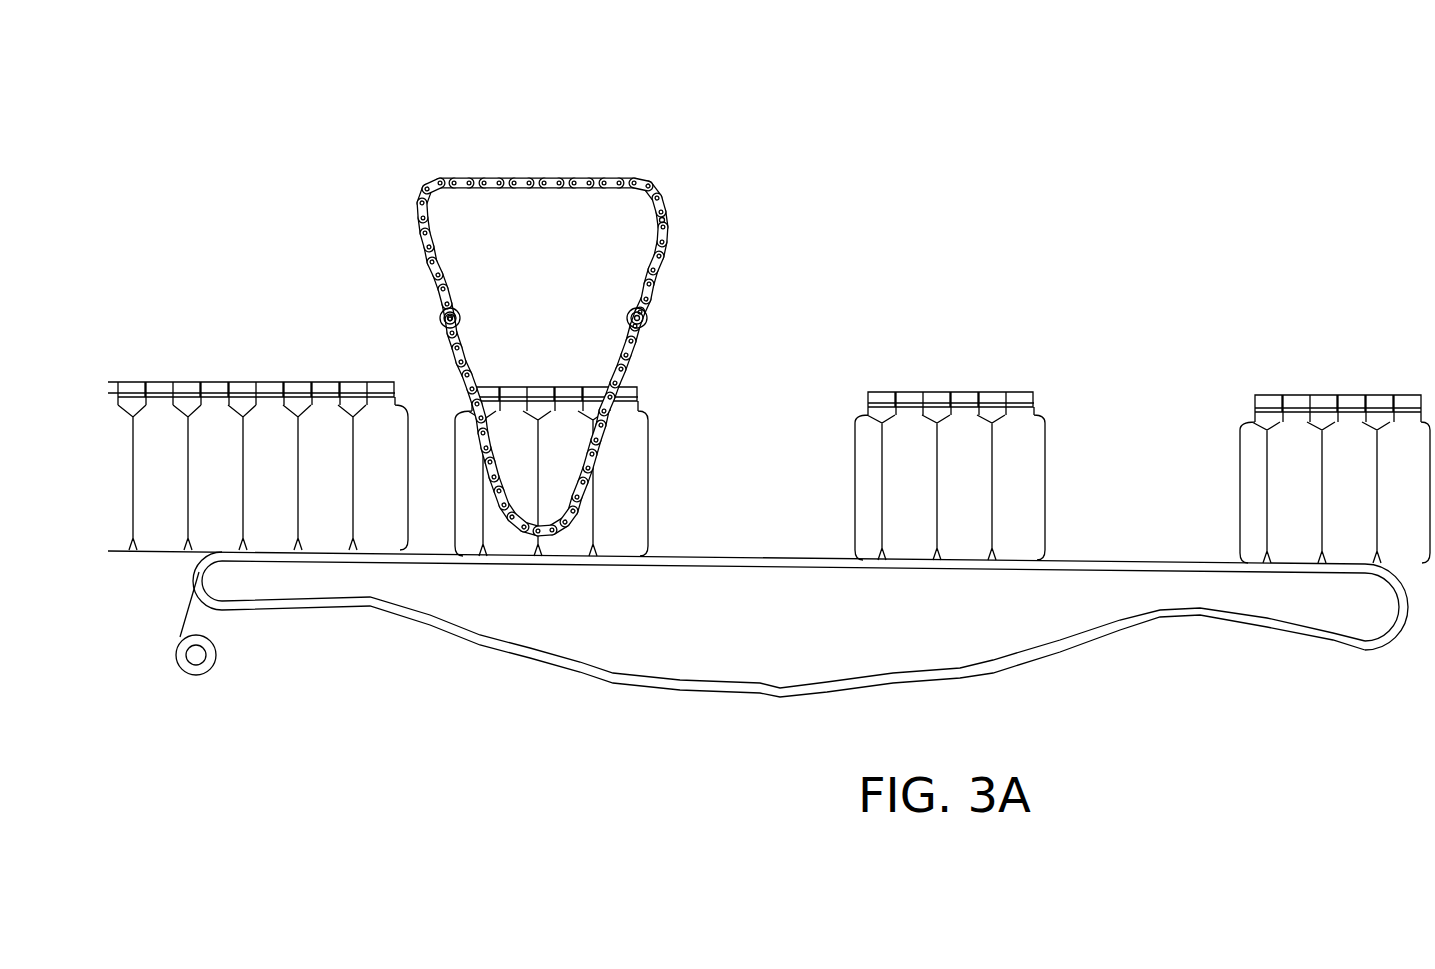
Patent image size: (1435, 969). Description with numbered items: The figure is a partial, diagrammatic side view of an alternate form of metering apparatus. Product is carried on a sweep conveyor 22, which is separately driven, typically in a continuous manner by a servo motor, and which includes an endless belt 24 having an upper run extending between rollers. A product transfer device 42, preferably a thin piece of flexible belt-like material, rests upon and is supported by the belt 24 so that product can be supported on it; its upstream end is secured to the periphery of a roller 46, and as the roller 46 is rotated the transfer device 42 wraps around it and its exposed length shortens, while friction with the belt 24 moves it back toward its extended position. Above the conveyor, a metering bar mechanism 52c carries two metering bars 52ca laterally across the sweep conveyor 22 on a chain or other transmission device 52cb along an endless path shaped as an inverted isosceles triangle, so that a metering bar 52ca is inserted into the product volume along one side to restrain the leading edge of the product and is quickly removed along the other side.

The sweep conveyor 22 is at (696, 683).
The endless belt 24 is at (540, 650).
The product transfer device 42 is at (190, 608).
The roller 46 is at (198, 655).
The metering bar mechanism 52c is at (556, 181).
The metering bar 52ca is at (458, 313).
The transmission device 52cb is at (668, 218).